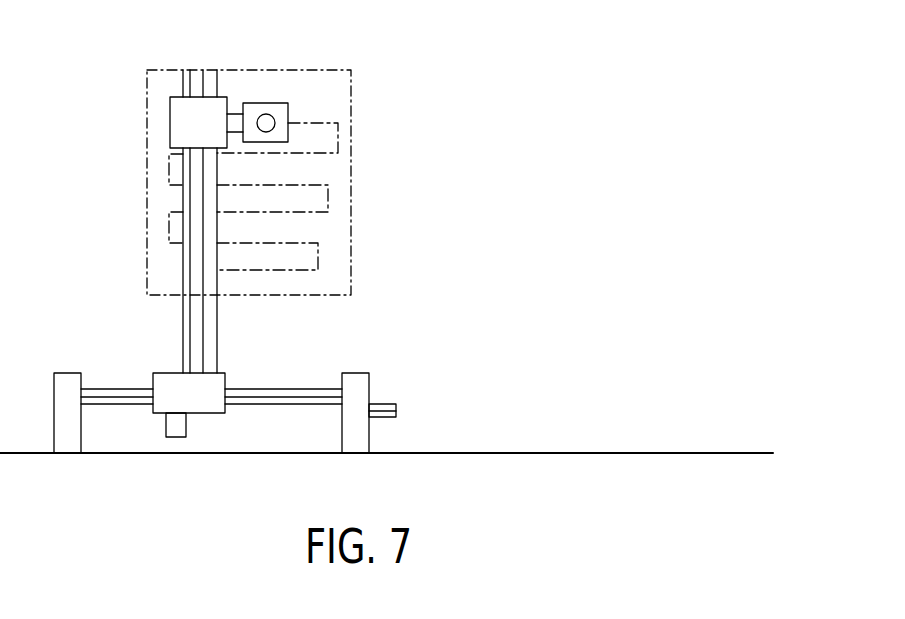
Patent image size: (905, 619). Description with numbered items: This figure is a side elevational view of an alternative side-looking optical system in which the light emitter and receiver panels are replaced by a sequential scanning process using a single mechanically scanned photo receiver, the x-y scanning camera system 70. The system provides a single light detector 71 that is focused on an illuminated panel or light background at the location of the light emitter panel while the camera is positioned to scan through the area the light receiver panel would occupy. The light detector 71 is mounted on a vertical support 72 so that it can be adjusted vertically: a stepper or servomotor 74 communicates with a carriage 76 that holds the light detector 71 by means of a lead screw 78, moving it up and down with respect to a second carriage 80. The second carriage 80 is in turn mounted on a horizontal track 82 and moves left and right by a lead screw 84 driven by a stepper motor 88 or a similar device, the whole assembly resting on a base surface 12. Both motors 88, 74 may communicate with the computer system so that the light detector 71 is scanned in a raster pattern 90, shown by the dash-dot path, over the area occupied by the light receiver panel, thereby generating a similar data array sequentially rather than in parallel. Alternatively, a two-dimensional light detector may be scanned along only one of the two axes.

The ground surface 12 is at (520, 453).
The x-y scanning camera system 70 is at (375, 110).
The light detector 71 is at (267, 103).
The vertical support 72 is at (211, 330).
The stepper or servomotor 74 is at (177, 437).
The carriage 76 is at (193, 125).
The lead screw 78 is at (183, 335).
The second carriage 80 is at (195, 397).
The horizontal track 82 is at (295, 393).
The lead screw 84 is at (322, 404).
The stepper motor 88 is at (382, 418).
The raster pattern 90 is at (335, 154).